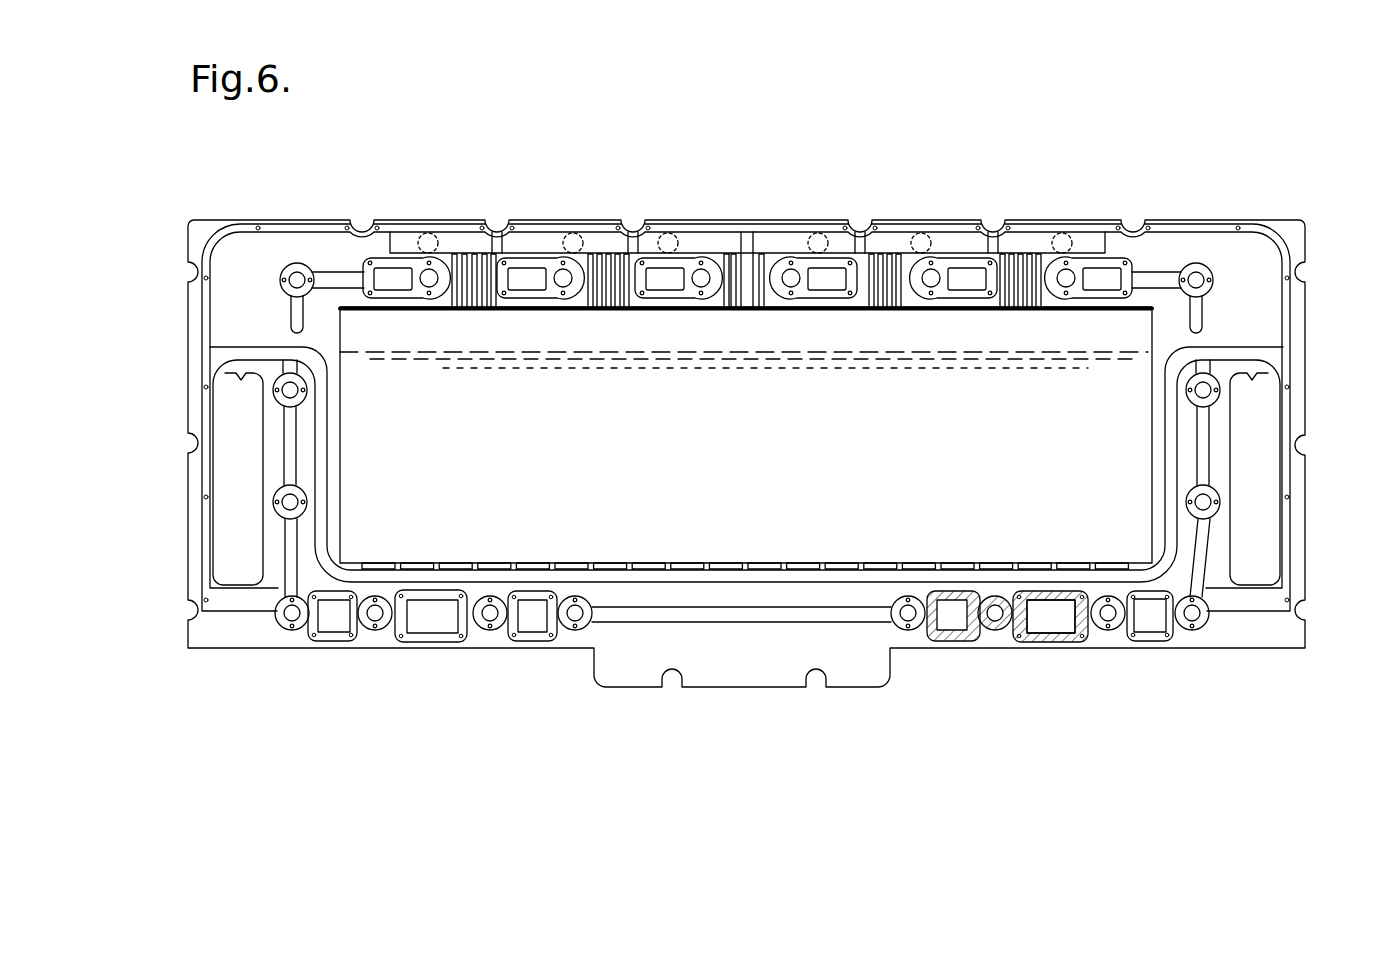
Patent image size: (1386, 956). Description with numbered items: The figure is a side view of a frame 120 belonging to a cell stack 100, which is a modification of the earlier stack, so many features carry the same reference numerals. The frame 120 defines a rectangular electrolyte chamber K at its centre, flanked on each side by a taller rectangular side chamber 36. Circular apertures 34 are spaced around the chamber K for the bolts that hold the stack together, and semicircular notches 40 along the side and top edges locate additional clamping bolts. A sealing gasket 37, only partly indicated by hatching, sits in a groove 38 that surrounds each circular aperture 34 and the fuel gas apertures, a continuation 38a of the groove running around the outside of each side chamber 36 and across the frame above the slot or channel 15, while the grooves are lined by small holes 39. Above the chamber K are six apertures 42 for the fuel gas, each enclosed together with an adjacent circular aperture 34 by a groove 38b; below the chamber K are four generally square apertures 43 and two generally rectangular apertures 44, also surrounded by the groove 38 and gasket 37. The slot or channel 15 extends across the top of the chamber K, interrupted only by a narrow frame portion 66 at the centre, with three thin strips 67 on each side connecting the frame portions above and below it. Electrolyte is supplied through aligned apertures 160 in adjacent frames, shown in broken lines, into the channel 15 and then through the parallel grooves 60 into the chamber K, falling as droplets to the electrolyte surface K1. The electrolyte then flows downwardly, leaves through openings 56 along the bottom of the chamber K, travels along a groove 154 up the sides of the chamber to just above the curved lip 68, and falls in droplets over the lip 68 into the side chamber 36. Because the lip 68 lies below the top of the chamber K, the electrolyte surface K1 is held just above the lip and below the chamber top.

The cell stack 100 is at (1226, 163).
The slot or channel 15 is at (462, 254).
The circular apertures 34 is at (296, 262).
The rectangular side chambers 36 is at (222, 432).
The sealing gasket 37 is at (1058, 642).
The groove 38 is at (1177, 622).
The continuation of the groove 38a is at (1287, 478).
The groove 38b is at (955, 262).
The small holes 39 is at (507, 232).
The semicircular notches 40 is at (862, 222).
The apertures 42 is at (396, 275).
The generally square apertures 43 is at (522, 632).
The generally rectangular apertures 44 is at (446, 632).
The openings 56 is at (718, 562).
The parallel grooves 60 is at (476, 258).
The narrow frame portion 66 is at (745, 268).
The strips 67 is at (498, 222).
The curved lip 68 is at (232, 375).
The frame 120 is at (688, 244).
The groove 154 is at (320, 468).
The apertures 160 is at (575, 232).
The electrolyte chamber K is at (872, 422).
The electrolyte surface K1 is at (758, 350).